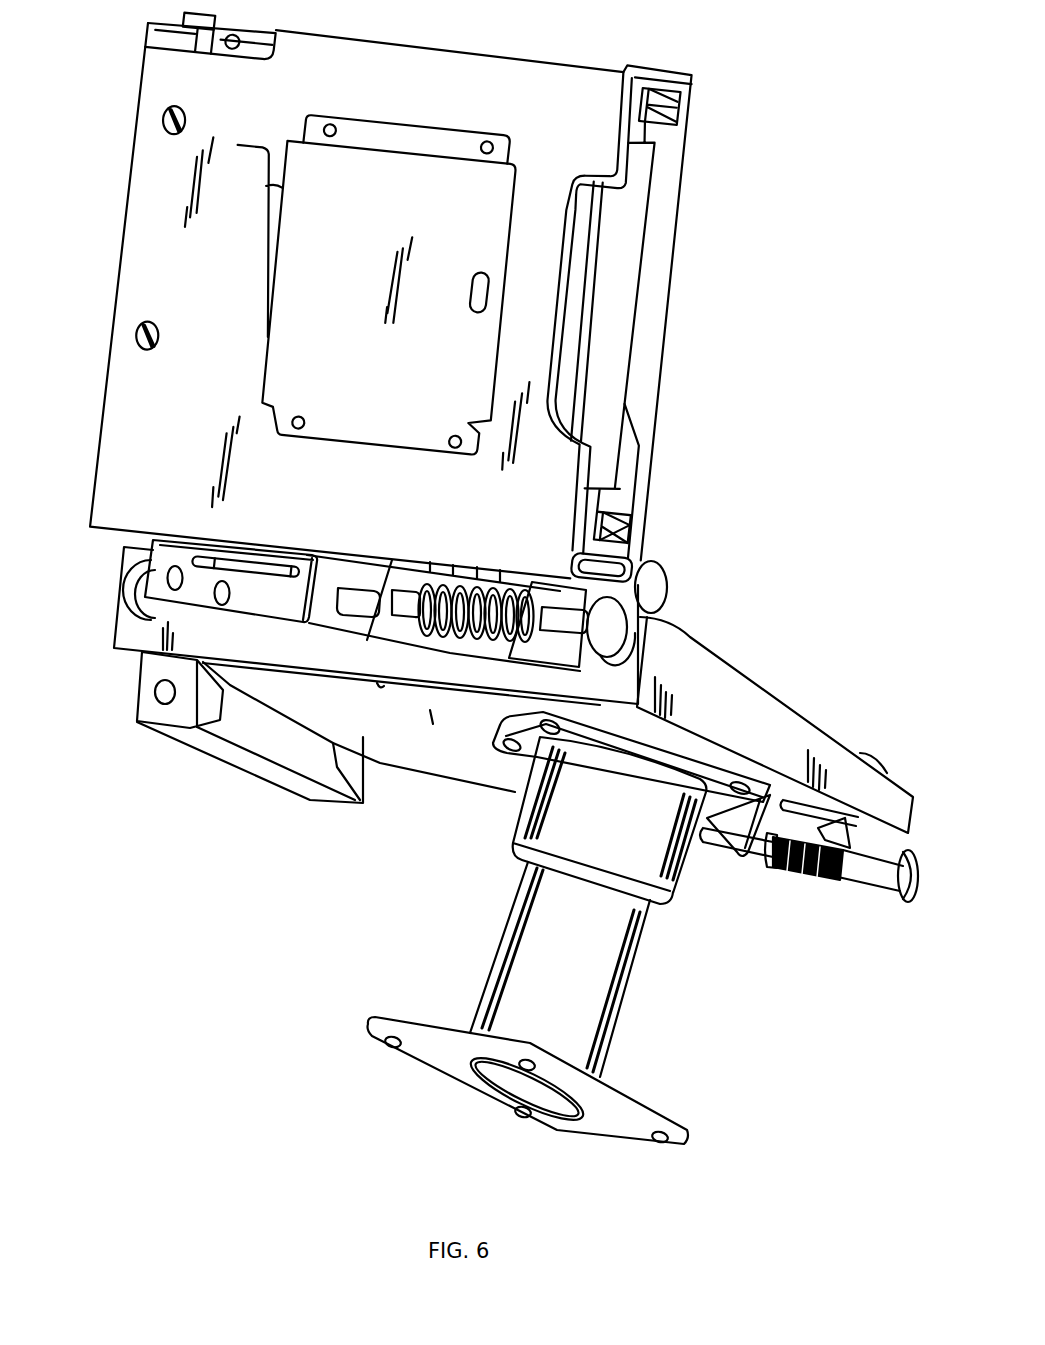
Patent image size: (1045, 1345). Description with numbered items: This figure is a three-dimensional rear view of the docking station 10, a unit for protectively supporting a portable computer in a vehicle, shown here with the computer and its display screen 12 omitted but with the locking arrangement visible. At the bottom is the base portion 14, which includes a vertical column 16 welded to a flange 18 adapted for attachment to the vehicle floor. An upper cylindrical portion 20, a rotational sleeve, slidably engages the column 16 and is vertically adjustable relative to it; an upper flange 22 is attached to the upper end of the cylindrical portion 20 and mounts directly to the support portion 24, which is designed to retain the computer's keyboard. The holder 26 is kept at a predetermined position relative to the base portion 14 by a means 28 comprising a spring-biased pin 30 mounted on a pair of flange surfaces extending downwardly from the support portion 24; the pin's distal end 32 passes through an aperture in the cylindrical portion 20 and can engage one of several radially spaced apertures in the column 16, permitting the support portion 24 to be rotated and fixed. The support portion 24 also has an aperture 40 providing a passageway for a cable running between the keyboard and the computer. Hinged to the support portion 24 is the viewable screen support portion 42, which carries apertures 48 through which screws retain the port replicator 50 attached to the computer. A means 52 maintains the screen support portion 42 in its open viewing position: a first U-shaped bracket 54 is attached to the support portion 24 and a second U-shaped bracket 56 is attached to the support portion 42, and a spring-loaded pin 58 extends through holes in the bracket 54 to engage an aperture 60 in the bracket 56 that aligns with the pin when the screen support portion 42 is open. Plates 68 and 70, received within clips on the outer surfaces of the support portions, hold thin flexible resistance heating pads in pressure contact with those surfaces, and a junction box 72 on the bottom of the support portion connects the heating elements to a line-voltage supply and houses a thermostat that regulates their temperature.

The docking station 10 is at (683, 373).
The display screen 12 is at (695, 150).
The base portion 14 is at (682, 977).
The vertical column 16 is at (575, 984).
The flange 18 is at (608, 1125).
The upper cylindrical portion 20 is at (648, 840).
The upper flange 22 is at (528, 734).
The support portion 24 is at (697, 645).
The holder 26 is at (116, 532).
The means for selectively maintaining the holder 28 is at (808, 886).
The spring-biased pin 30 is at (865, 874).
The distal end 32 is at (722, 838).
The aperture 40 is at (124, 618).
The viewable screen support portion 42 is at (170, 260).
The apertures 48 is at (166, 119).
The port replicator 50 is at (150, 32).
The means for maintaining the screen support portion at an open position 52 is at (320, 640).
The first U-shaped bracket 54 is at (432, 650).
The second U-shaped bracket 56 is at (243, 592).
The spring-loaded pin 58 is at (362, 600).
The aperture 60 is at (355, 595).
The plate 68 is at (368, 742).
The plate 70 is at (400, 190).
The junction box 72 is at (235, 750).